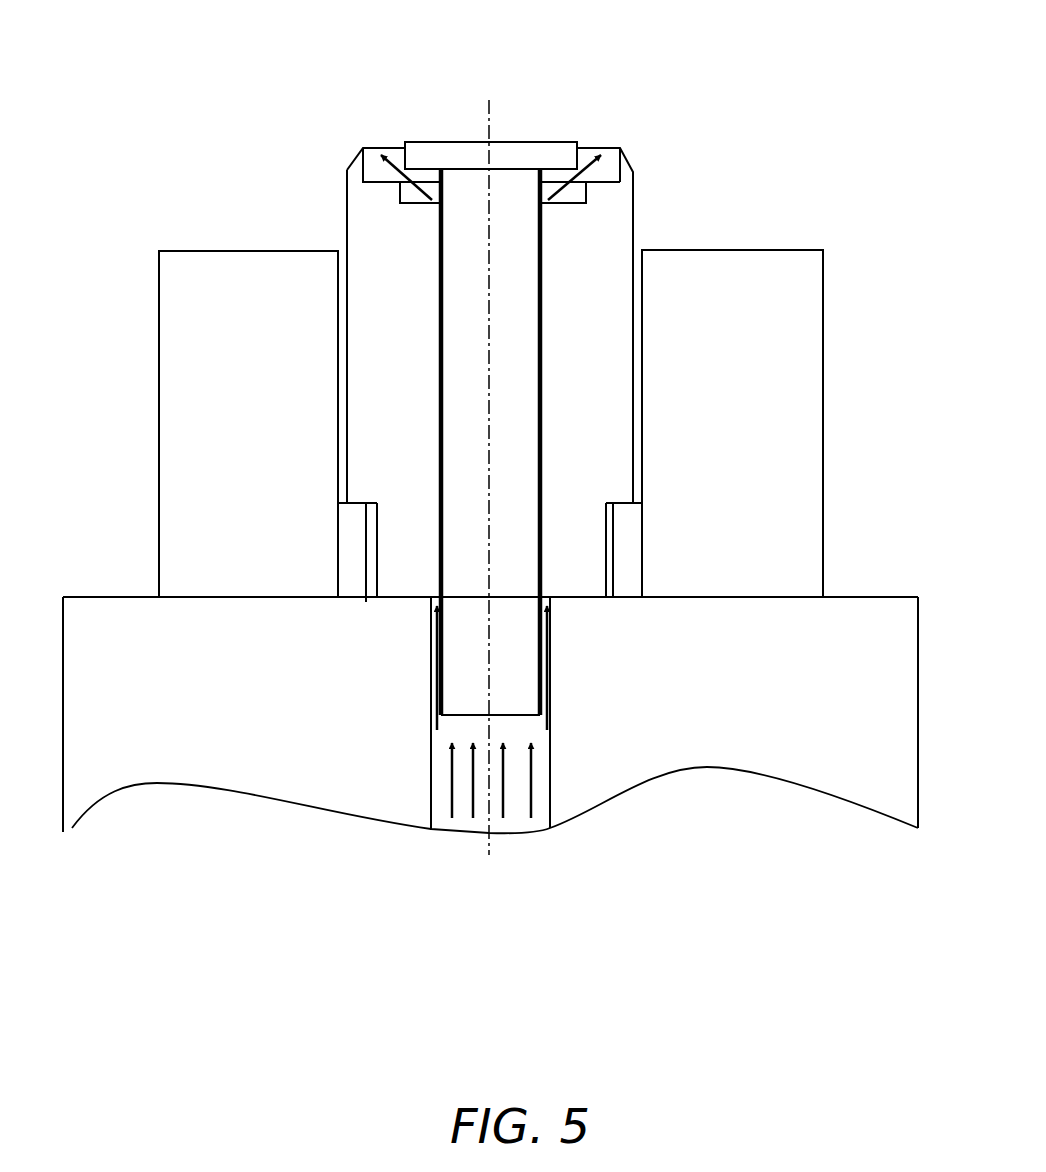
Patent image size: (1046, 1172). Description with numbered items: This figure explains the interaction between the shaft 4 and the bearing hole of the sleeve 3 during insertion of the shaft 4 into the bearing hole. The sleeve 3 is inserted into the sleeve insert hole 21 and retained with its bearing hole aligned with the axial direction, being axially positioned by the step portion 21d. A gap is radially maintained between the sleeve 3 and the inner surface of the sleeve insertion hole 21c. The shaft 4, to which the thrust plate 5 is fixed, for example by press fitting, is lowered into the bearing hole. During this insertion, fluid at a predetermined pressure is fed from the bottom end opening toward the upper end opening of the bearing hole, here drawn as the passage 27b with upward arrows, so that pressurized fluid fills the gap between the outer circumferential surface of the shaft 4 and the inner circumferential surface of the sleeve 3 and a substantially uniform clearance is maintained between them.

The sleeve 3 is at (633, 232).
The shaft 4 is at (525, 243).
The thrust plate 5 is at (521, 152).
The sleeve insert hole 21 is at (823, 349).
The sleeve insert hole 21c is at (642, 410).
The step portion 21d is at (358, 502).
The supply passage 27b is at (523, 828).